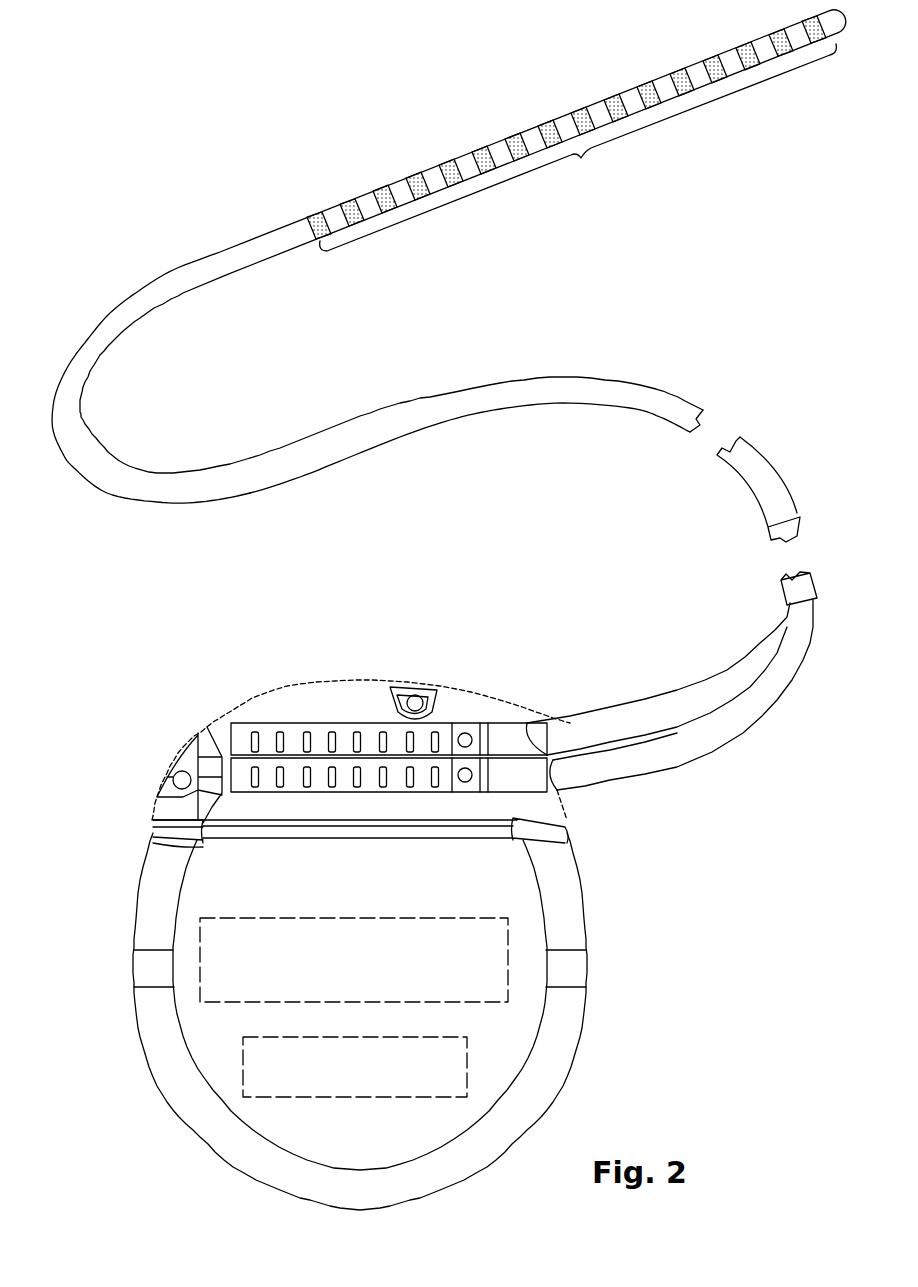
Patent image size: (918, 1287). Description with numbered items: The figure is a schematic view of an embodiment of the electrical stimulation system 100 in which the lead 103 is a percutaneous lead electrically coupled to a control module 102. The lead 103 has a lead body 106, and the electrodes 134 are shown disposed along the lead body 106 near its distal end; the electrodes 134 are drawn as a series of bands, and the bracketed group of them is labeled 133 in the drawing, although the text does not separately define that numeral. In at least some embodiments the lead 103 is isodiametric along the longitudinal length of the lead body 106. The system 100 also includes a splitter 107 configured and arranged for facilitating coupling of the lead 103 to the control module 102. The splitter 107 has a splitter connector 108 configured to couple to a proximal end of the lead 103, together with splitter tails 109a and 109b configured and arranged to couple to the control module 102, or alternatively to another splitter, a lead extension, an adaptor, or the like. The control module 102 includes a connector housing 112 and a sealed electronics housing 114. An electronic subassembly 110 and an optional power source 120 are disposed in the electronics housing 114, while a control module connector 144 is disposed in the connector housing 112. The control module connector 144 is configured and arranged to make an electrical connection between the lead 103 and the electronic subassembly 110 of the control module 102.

The electrical stimulation system 100 is at (167, 124).
The control module 102 is at (94, 700).
The lead 103 is at (99, 243).
The lead body 106 is at (612, 388).
The splitter 107 is at (688, 617).
The splitter connector 108 is at (777, 550).
The splitter tail 109a is at (665, 703).
The splitter tail 109b is at (747, 712).
The electronic subassembly 110 is at (218, 965).
The connector housing 112 is at (175, 718).
The electronics housing 114 is at (101, 896).
The power source 120 is at (260, 1072).
The electrode array 133 is at (578, 147).
The electrodes 134 is at (614, 97).
The control module connector 144 is at (297, 722).